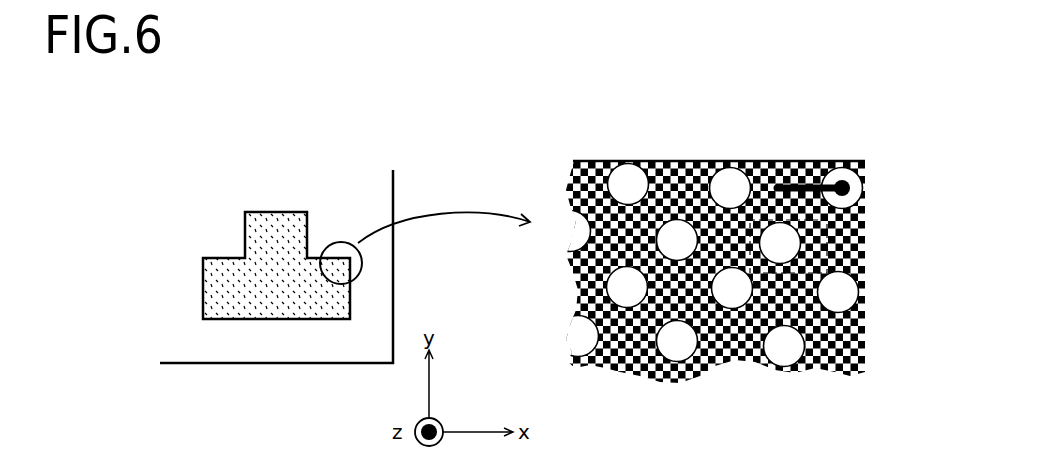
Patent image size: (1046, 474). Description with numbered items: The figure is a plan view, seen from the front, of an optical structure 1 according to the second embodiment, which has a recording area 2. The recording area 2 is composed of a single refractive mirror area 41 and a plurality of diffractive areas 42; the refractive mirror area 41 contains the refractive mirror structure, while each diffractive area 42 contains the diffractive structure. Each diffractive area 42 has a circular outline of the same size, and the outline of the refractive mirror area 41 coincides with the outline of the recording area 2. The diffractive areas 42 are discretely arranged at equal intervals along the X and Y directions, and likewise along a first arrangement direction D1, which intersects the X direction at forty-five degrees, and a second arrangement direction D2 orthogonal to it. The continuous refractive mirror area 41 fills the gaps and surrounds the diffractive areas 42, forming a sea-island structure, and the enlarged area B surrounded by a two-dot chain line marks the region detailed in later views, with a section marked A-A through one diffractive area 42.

The optical structure 1 is at (204, 148).
The recording area 2 is at (743, 269).
The refractive mirror area 41 is at (730, 350).
The diffractive area 42 is at (630, 163).
The enlarged area B is at (865, 243).
The section line A- A is at (813, 160).
The first arrangement direction D1 is at (610, 415).
The second arrangement direction D2 is at (690, 122).